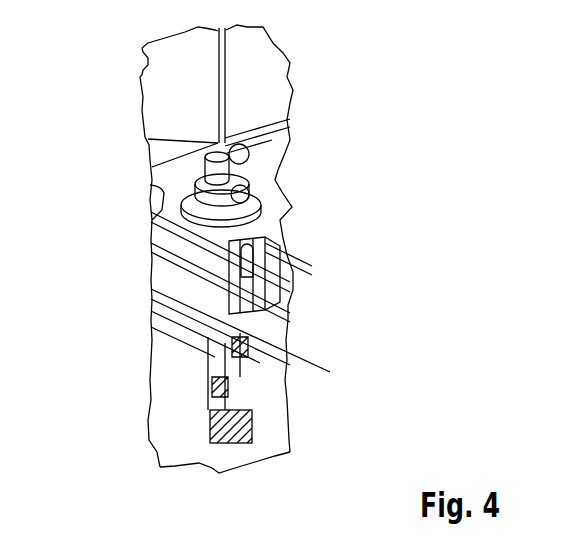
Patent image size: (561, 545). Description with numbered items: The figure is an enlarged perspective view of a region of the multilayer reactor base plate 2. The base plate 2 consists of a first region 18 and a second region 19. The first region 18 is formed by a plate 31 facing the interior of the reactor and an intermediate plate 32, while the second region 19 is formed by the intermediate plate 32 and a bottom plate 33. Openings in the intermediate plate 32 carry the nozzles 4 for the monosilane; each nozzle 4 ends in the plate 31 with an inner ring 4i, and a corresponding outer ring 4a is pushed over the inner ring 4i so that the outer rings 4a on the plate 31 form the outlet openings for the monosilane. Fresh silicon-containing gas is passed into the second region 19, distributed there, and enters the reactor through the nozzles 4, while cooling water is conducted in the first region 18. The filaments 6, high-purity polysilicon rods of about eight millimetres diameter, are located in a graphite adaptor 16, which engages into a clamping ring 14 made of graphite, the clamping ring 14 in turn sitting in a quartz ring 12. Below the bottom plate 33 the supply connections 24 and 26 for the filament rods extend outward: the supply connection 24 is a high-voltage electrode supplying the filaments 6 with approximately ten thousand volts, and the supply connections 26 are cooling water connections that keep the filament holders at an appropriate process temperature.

The reactor base plate 2 is at (270, 364).
The nozzle 4 is at (298, 307).
The outer ring 4a is at (251, 156).
The inner ring 4i is at (268, 286).
The filament 6 is at (226, 111).
The quartz ring 12 is at (150, 250).
The clamping ring 14 is at (258, 196).
The graphite adaptor 16 is at (148, 139).
The first region 18 is at (154, 224).
The second region 19 is at (168, 277).
The supply connection 24 is at (151, 368).
The supply connection 26 is at (215, 437).
The plate facing the interior of the reactor 31 is at (150, 186).
The intermediate plate 32 is at (290, 334).
The bottom plate 33 is at (283, 350).